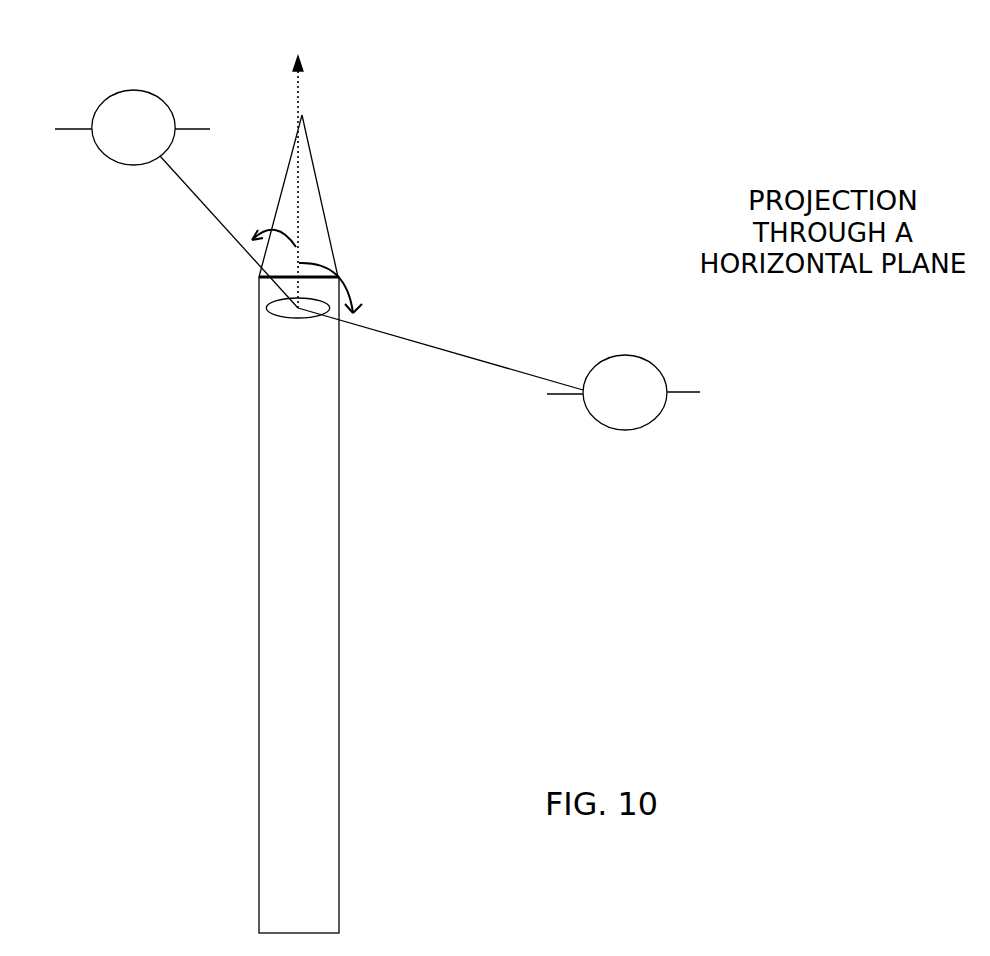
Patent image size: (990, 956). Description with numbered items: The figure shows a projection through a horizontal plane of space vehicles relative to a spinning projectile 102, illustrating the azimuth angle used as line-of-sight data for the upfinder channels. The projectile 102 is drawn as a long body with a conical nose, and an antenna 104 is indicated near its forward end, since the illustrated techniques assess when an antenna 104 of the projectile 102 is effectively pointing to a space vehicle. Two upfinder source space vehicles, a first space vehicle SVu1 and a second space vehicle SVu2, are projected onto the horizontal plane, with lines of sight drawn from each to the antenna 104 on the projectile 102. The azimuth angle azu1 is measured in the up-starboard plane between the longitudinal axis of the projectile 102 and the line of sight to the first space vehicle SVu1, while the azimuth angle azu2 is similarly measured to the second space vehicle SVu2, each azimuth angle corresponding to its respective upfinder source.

The projectile 102 is at (333, 703).
The antenna 104 is at (298, 320).
The space vehicle SVu1 is at (176, 199).
The space vehicle SVu2 is at (499, 369).
The azimuth angle azu1 is at (268, 219).
The azimuth angle azu2 is at (349, 285).